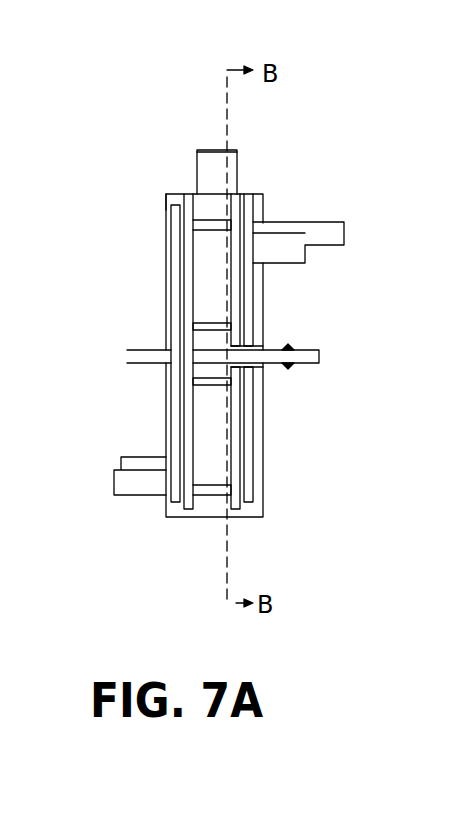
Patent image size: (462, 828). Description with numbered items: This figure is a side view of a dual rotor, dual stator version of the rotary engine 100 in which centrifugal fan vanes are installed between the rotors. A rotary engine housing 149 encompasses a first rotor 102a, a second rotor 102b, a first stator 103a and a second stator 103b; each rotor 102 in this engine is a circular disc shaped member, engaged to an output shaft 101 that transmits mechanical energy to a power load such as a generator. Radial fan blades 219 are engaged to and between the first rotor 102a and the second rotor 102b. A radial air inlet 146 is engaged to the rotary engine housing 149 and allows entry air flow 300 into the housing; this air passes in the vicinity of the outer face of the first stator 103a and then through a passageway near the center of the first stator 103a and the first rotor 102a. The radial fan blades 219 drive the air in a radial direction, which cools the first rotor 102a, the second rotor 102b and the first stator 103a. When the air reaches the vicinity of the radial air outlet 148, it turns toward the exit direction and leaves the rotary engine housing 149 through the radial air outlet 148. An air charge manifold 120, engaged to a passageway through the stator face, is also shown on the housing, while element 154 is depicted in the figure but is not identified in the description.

The rotary engine 100 is at (263, 467).
The output shaft 101 is at (320, 360).
The rotor 102 is at (239, 190).
The first rotor 102a is at (244, 517).
The second rotor 102b is at (188, 510).
The first stator 103a is at (257, 205).
The second stator 103b is at (171, 200).
The air charge manifold 120 is at (147, 495).
The radial air inlet 146 is at (274, 370).
The radial air outlet 148 is at (193, 150).
The rotary engine housing 149 is at (167, 205).
The support ledge 154 is at (263, 345).
The radial fan blades 219 is at (208, 275).
The entry air flow 300 is at (232, 348).